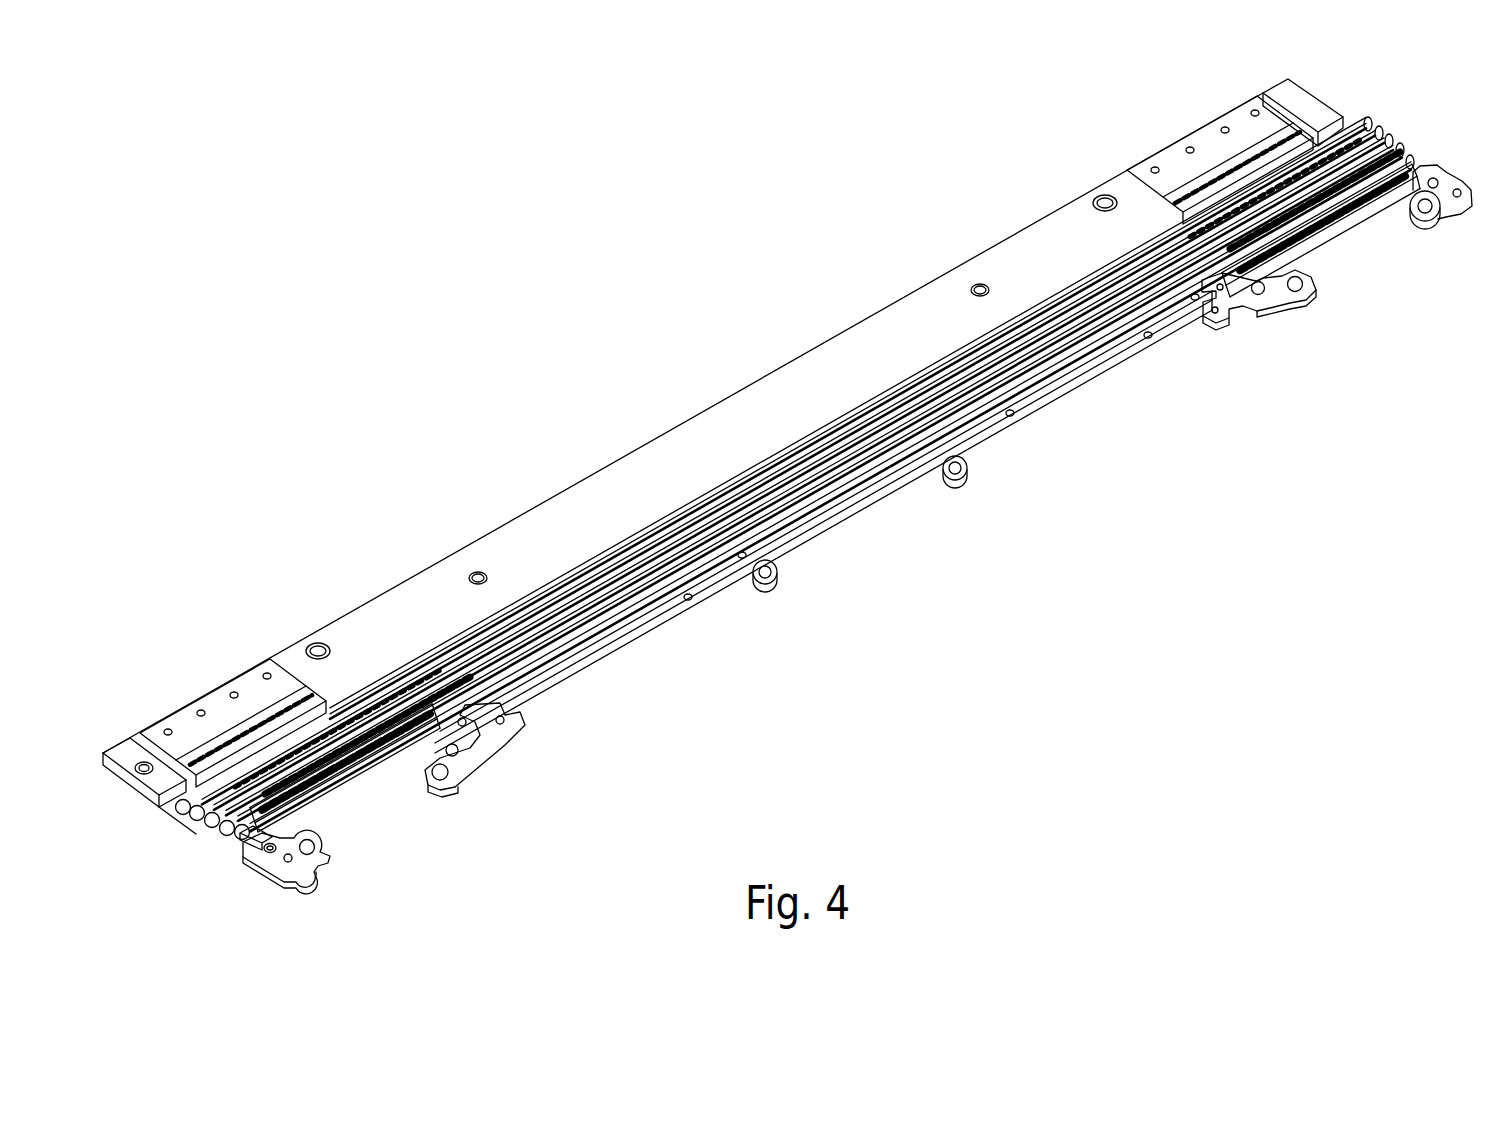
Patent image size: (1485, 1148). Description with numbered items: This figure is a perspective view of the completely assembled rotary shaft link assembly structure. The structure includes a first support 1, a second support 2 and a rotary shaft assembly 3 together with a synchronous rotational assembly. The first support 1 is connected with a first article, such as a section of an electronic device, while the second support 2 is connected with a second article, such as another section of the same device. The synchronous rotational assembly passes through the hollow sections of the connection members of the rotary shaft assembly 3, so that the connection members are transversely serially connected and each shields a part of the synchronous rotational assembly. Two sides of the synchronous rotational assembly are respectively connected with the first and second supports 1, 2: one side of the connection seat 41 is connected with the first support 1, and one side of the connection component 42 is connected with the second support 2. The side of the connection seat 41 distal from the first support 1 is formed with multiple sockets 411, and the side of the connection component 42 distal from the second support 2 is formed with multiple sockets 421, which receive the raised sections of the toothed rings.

The first support 1 is at (640, 470).
The second support 2 is at (820, 510).
The rotary shaft assembly 3 is at (850, 418).
The connection seat 41 is at (248, 678).
The sockets 411 is at (235, 748).
The connection component 42 is at (390, 785).
The sockets 421 is at (320, 797).